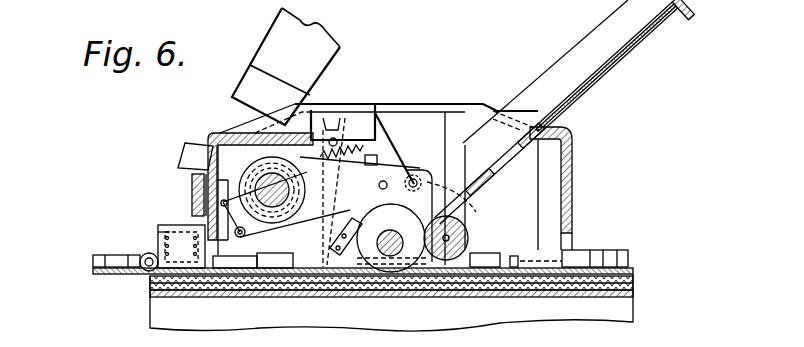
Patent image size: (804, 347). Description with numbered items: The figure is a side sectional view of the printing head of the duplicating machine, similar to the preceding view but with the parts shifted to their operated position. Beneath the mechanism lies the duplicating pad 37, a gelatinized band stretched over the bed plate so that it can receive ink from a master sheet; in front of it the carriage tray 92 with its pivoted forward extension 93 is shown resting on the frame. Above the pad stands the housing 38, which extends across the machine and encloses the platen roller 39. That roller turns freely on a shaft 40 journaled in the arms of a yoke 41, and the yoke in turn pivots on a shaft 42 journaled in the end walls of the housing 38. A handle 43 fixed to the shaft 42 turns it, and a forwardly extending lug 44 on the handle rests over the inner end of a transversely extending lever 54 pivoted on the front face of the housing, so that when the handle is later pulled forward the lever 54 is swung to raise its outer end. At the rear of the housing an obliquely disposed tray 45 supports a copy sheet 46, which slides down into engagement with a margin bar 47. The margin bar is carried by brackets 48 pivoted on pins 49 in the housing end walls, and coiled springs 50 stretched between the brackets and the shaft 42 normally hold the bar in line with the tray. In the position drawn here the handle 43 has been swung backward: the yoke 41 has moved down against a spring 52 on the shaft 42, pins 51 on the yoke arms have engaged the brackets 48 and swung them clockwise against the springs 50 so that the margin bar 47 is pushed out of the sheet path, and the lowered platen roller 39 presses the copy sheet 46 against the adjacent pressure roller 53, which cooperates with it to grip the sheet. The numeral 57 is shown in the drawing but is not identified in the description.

The duplicating pad 37 is at (453, 273).
The housing 38 is at (423, 104).
The platen roller 39 is at (426, 205).
The shaft 40 is at (392, 262).
The yoke 41 is at (386, 178).
The shaft 42 is at (273, 200).
The handle 43 is at (325, 40).
The lug 44 is at (193, 147).
The tray 45 is at (618, 36).
The copy sheet 46 is at (562, 107).
The margin bar 47 is at (325, 238).
The brackets 48 is at (389, 138).
The pins 49 is at (419, 163).
The coiled springs 50 is at (344, 140).
The pins 51 is at (467, 202).
The spring 52 is at (192, 181).
The pressure roller 53 is at (469, 238).
The lever 54 is at (191, 198).
The support 57 is at (445, 5).
The tray 92 is at (608, 263).
The forward extension 93 is at (118, 268).